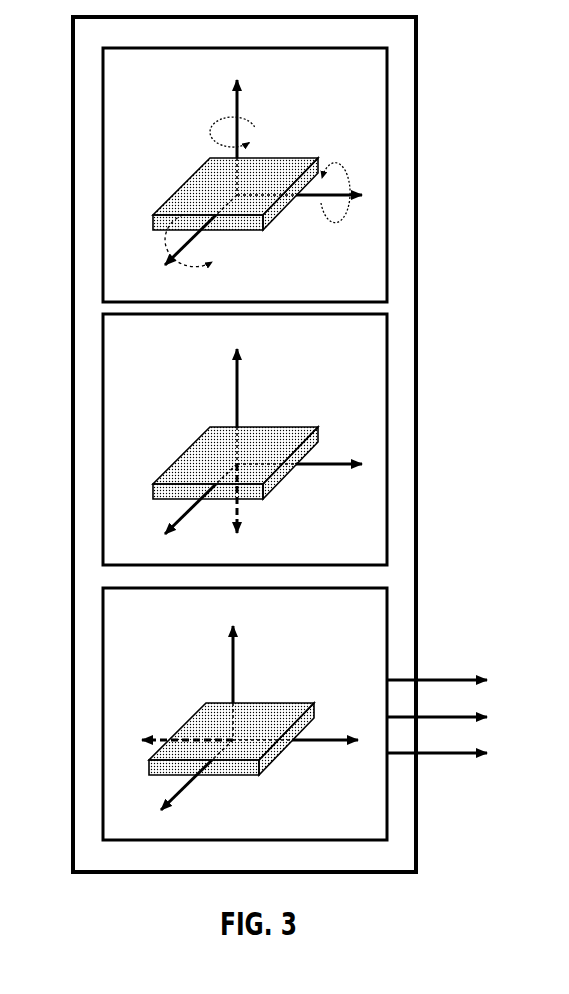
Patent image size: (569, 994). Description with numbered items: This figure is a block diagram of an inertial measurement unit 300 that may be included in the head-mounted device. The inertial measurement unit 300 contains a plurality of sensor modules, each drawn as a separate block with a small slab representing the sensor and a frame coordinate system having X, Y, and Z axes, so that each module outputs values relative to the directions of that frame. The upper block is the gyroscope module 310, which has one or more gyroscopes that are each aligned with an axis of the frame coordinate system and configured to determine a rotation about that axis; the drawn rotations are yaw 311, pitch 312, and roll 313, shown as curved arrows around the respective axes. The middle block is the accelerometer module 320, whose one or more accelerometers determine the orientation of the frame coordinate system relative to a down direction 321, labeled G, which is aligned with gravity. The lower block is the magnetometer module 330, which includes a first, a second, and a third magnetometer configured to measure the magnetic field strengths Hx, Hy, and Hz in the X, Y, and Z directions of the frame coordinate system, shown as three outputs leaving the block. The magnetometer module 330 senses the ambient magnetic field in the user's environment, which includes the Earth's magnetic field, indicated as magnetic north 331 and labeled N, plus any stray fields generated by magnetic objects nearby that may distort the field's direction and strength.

The inertial measurement unit 300 is at (72, 53).
The gyroscope module 310 is at (390, 80).
The yaw 311 is at (187, 215).
The pitch 312 is at (334, 165).
The roll 313 is at (215, 118).
The accelerometer module 320 is at (388, 360).
The down direction 321 is at (243, 505).
The magnetometer module 330 is at (390, 633).
The magnetic north 331 is at (180, 735).